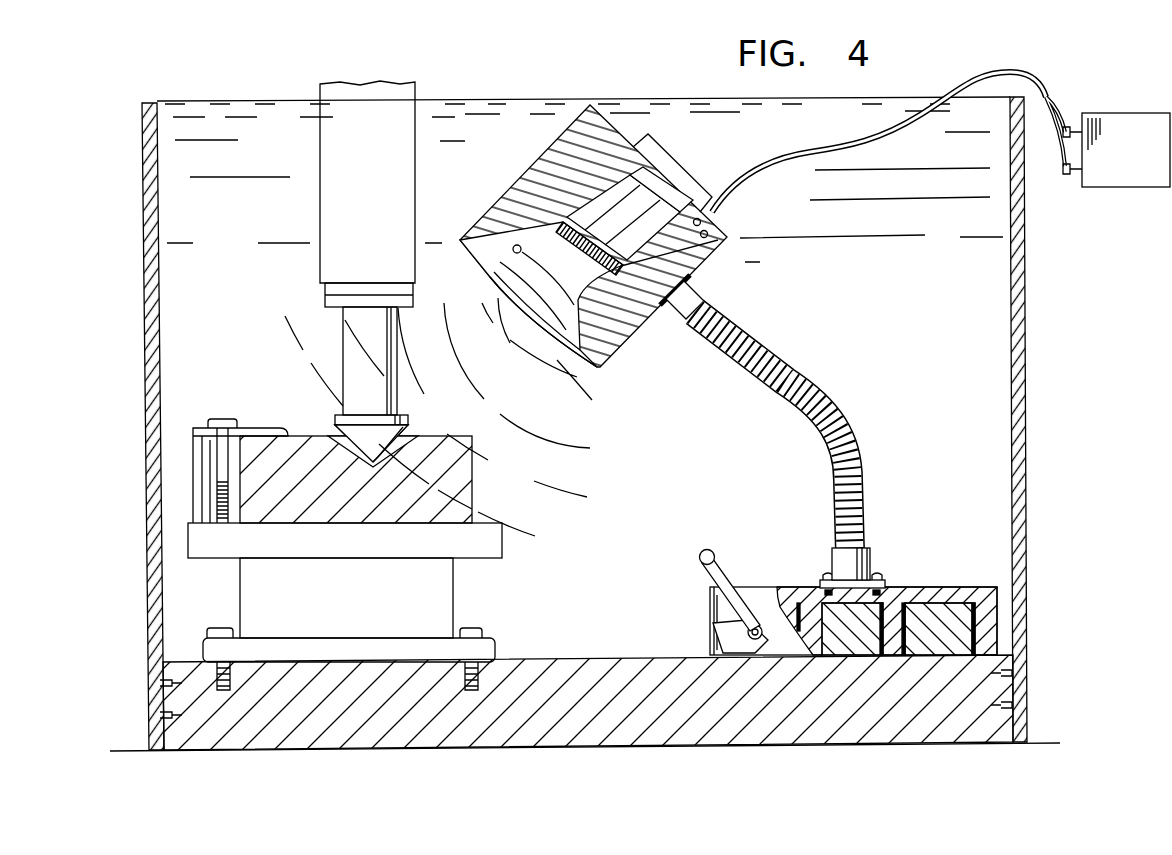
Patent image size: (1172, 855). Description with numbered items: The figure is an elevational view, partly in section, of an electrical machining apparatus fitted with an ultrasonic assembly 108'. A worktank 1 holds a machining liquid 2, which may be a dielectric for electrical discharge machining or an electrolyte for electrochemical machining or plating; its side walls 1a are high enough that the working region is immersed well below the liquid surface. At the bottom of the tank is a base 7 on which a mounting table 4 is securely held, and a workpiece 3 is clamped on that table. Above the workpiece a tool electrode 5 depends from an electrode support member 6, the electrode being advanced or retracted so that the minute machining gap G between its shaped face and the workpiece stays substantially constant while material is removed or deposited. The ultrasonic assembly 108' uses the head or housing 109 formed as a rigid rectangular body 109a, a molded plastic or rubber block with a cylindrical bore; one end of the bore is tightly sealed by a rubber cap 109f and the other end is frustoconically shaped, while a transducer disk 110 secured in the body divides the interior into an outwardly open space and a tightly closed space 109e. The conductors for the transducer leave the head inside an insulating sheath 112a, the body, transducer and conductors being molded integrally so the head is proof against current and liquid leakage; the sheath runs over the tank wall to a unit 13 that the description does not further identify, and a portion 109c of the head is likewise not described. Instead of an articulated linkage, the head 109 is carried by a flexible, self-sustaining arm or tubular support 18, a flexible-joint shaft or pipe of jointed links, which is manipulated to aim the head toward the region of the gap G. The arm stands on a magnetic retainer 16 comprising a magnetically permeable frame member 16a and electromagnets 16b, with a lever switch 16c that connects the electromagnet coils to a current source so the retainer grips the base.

The worktank 1 is at (586, 424).
The side walls 1a is at (152, 251).
The machining liquid 2 is at (166, 168).
The workpiece 3 is at (357, 477).
The mounting table 4 is at (440, 606).
The tool electrode 5 is at (335, 420).
The electrode support member 6 is at (327, 143).
The base 7 is at (563, 676).
The generator 13 is at (1113, 190).
The magnetic retainer 16 is at (883, 582).
The magnetically permeable frame member 16a is at (895, 585).
The electromagnets 16b is at (817, 610).
The lever switch 16c is at (738, 572).
The flexible self-sustaining arm or tubular support 18 is at (862, 458).
The ultrasonic assembly 108' is at (641, 214).
The housing 109 is at (688, 89).
The rigid rectangular body 109a is at (533, 175).
The horn mouth opening 109c is at (500, 270).
The tightly closed space 109e is at (672, 170).
The rubber cap 109f is at (653, 152).
The transducer disk 110 is at (583, 268).
The insulating sheath 112a is at (858, 158).
The machining gap G is at (410, 440).